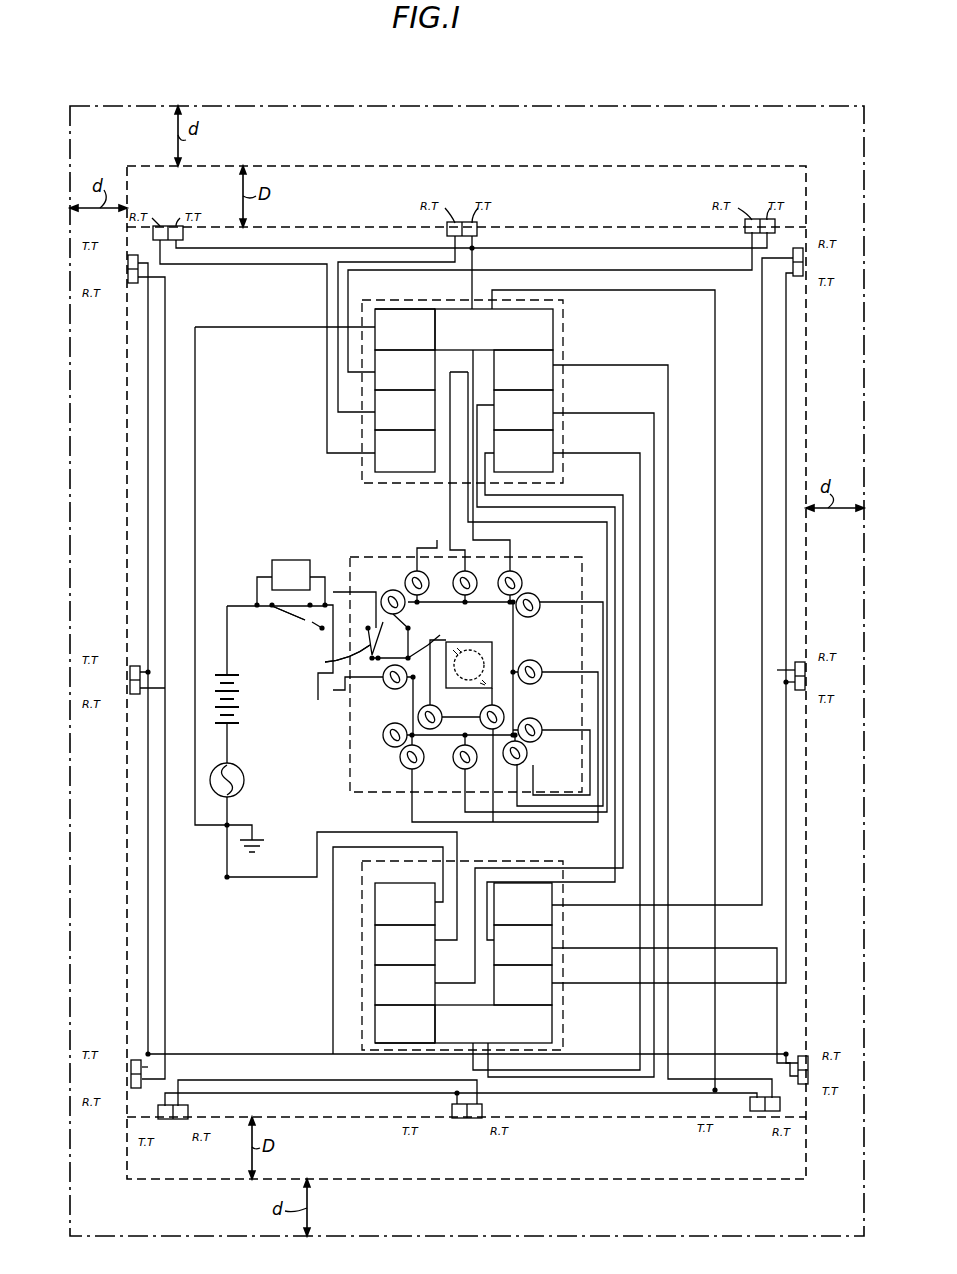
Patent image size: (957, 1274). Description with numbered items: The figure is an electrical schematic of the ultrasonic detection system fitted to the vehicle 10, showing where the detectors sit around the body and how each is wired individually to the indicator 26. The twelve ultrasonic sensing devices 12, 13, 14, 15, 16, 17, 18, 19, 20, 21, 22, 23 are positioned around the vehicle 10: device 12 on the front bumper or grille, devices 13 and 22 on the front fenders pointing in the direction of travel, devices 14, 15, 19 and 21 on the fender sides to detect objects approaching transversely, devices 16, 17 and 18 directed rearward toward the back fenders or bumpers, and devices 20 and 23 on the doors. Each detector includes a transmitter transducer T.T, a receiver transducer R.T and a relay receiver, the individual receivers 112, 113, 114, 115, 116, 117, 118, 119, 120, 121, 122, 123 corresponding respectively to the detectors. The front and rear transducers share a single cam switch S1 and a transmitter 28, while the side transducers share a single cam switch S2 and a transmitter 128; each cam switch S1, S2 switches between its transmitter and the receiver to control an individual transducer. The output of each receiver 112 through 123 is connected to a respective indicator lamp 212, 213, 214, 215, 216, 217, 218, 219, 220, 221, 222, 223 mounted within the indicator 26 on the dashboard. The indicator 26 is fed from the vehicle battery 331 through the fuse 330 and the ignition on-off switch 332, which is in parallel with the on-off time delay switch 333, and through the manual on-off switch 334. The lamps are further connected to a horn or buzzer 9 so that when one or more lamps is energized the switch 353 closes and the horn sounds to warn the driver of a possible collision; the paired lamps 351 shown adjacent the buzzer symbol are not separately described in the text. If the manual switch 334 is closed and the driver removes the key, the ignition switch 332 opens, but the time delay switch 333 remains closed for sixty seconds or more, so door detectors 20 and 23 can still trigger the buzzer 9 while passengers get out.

The vehicle 10 is at (127, 462).
The ultrasonic sensing device 12 is at (456, 222).
The ultrasonic sensing device 13 is at (752, 219).
The ultrasonic sensing device 14 is at (804, 266).
The ultrasonic sensing device 15 is at (809, 1072).
The ultrasonic sensing device 16 is at (760, 1111).
The ultrasonic sensing device 17 is at (462, 1118).
The ultrasonic sensing device 18 is at (168, 1119).
The ultrasonic sensing device 19 is at (130, 1075).
The ultrasonic sensing device 20 is at (128, 681).
The ultrasonic sensing device 21 is at (126, 270).
The ultrasonic sensing device 22 is at (163, 226).
The ultrasonic sensing device 23 is at (806, 678).
The indicator 26 is at (350, 810).
The transmitter 28 is at (558, 324).
The transmitter 128 is at (556, 1028).
The cam switch S1 is at (396, 300).
The cam switch S2 is at (366, 1028).
The horn or buzzer 9 is at (496, 665).
The receiver 112 is at (420, 426).
The receiver 113 is at (420, 386).
The receiver 114 is at (538, 920).
The receiver 115 is at (538, 1001).
The receiver 116 is at (538, 386).
The receiver 117 is at (538, 426).
The receiver 118 is at (538, 467).
The receiver 119 is at (420, 1001).
The receiver 120 is at (420, 961).
The receiver 121 is at (420, 920).
The receiver 122 is at (420, 467).
The receiver 123 is at (538, 961).
The indicator lamp 212 is at (455, 570).
The indicator lamp 213 is at (510, 570).
The indicator lamp 214 is at (535, 595).
The indicator lamp 215 is at (534, 718).
The indicator lamp 216 is at (524, 765).
The indicator lamp 217 is at (462, 769).
The indicator lamp 218 is at (412, 770).
The indicator lamp 219 is at (393, 748).
The indicator lamp 220 is at (396, 690).
The indicator lamp 221 is at (388, 595).
The indicator lamp 222 is at (403, 572).
The indicator lamp 223 is at (533, 660).
The fuse 330 is at (244, 776).
The battery 331 is at (243, 695).
The ignition on-off switch 332 is at (298, 618).
The on-off time delay switch 333 is at (292, 560).
The manual on-off switch 334 is at (325, 662).
The indicator lamps 351 is at (482, 708).
The switch 353 is at (426, 640).